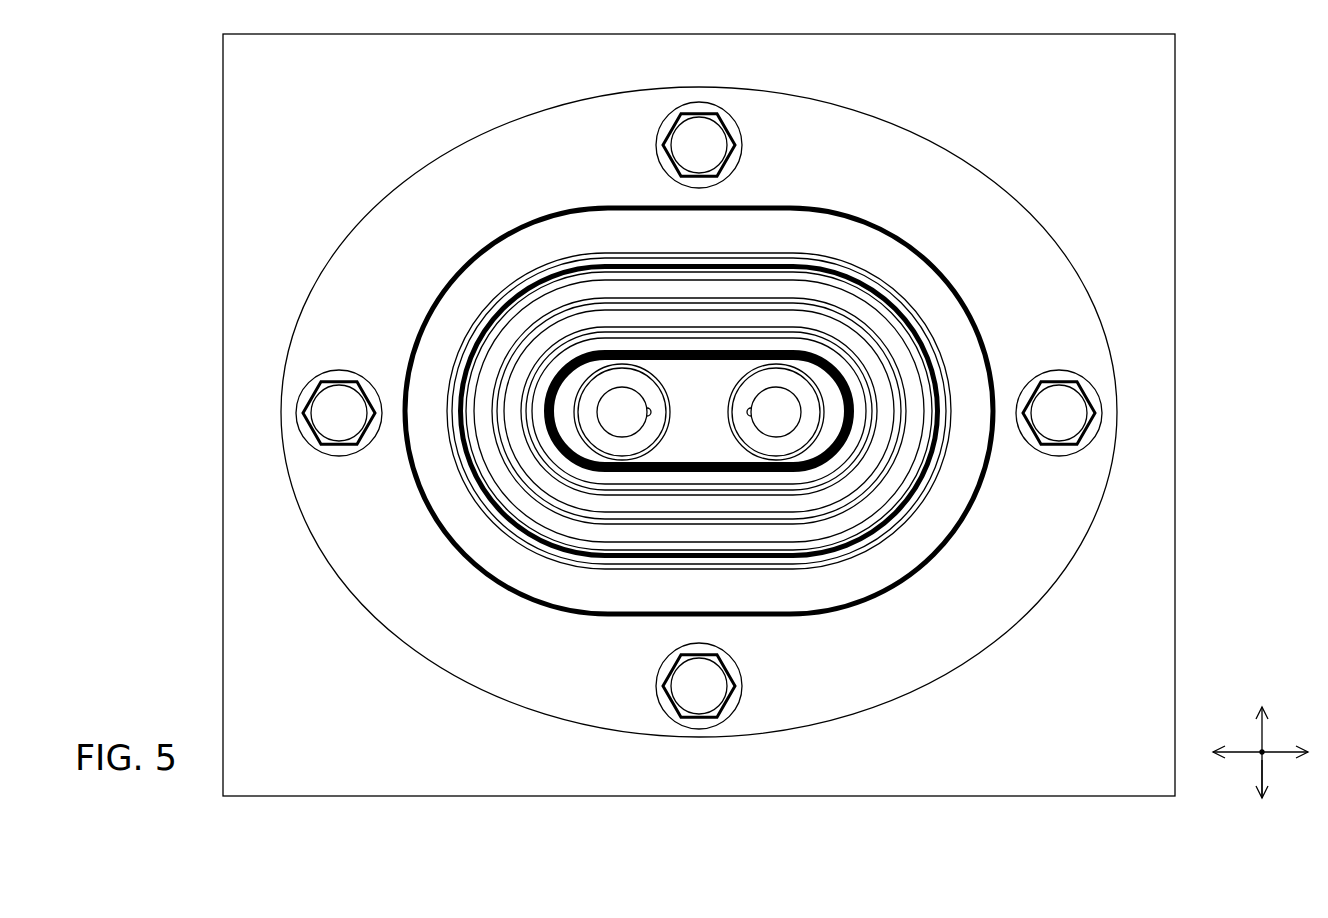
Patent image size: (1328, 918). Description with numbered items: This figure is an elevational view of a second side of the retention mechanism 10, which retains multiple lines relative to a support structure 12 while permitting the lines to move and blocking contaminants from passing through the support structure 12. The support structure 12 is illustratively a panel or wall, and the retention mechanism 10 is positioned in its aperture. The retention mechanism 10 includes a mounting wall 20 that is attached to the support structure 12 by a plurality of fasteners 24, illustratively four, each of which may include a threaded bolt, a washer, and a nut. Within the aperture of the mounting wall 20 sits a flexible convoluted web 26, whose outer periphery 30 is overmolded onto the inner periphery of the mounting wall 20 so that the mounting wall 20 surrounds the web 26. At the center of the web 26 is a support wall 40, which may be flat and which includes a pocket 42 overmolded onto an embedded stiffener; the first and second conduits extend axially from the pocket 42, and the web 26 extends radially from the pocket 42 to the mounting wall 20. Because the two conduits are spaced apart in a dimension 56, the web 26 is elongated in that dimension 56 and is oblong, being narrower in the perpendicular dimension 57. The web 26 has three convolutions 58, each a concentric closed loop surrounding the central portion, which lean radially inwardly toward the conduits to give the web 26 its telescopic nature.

The retention mechanism 10 is at (442, 197).
The support structure 12 is at (265, 270).
The mounting wall 20 is at (397, 600).
The fasteners 24 is at (702, 142).
The flexible convoluted web 26 is at (875, 325).
The outer periphery 30 is at (917, 555).
The support wall 40 is at (674, 425).
The pocket 42 is at (674, 409).
The dimension 56 is at (1255, 751).
The dimension 57 is at (1266, 768).
The convolutions 58 is at (830, 487).